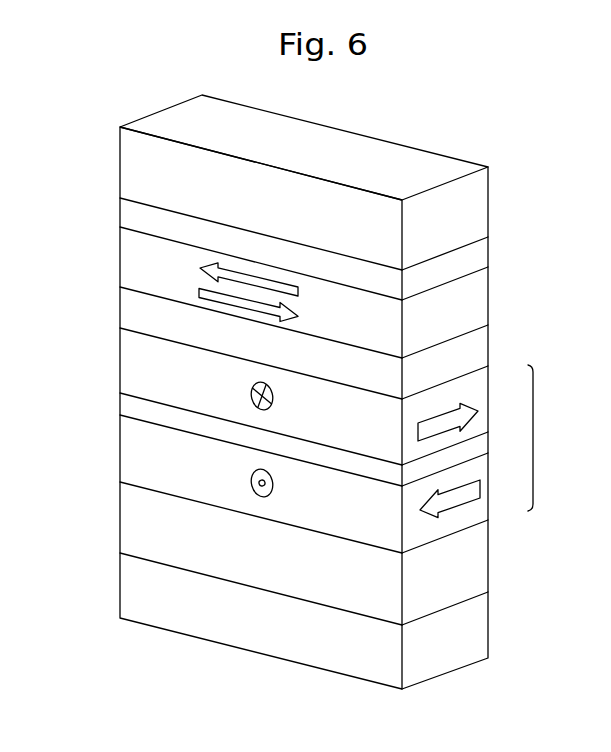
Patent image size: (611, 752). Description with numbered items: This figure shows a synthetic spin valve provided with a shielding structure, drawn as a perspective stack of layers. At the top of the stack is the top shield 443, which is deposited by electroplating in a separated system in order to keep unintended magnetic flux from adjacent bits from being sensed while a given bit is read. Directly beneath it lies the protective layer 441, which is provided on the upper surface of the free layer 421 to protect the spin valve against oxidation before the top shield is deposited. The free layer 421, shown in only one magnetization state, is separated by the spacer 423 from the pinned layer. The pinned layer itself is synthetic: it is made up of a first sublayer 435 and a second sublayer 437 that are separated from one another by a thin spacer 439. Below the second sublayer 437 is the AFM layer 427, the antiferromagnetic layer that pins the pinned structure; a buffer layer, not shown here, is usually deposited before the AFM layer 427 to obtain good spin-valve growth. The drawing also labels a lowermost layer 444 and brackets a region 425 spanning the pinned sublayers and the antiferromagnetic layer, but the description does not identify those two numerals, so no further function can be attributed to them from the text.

The top shield 443 is at (120, 168).
The protective layer 441 is at (120, 213).
The free layer 421 is at (120, 262).
The spacer 423 is at (120, 311).
The first sublayer 435 is at (120, 361).
The spacer 439 is at (120, 409).
The second sublayer 437 is at (120, 459).
The AFM layer 427 is at (120, 522).
The bottom electrode layer 444 is at (120, 595).
The synthetic antiferromagnet structure 425 is at (551, 438).